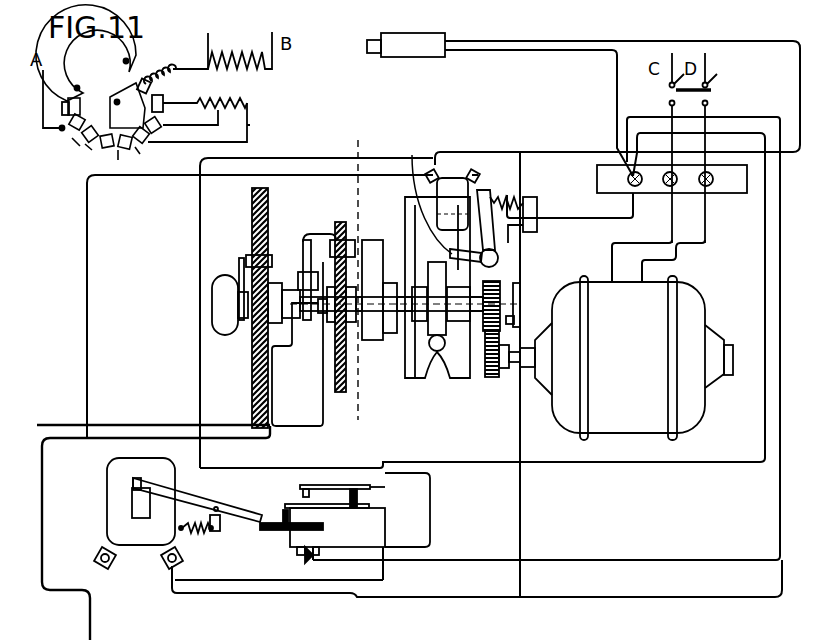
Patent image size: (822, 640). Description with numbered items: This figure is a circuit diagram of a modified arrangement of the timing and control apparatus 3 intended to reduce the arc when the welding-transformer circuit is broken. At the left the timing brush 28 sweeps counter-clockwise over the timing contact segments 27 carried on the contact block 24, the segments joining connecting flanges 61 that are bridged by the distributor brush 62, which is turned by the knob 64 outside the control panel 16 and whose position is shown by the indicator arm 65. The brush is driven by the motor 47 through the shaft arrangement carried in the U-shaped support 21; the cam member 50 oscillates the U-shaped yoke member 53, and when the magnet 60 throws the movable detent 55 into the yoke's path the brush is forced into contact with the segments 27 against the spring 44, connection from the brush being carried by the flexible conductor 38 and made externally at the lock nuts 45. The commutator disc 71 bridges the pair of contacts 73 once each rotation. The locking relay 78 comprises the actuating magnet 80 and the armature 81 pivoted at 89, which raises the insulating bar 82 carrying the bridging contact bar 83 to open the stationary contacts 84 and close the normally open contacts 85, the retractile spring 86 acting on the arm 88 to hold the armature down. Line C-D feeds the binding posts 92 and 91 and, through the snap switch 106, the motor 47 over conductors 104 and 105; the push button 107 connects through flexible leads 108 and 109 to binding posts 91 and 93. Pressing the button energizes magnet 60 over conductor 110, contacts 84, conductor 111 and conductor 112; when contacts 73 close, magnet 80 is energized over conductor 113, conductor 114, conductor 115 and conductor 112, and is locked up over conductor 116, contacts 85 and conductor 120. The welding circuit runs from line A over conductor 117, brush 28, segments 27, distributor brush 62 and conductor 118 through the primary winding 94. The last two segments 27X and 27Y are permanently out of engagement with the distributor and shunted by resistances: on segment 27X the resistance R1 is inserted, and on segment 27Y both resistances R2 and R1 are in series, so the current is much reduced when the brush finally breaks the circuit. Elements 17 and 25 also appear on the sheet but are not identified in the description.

The timing and control apparatus 3 is at (232, 221).
The control panel 16 is at (253, 194).
The push rod head 17 is at (214, 318).
The U-shaped support 21 is at (447, 392).
The contact block 24 is at (342, 394).
The contact bar 25 is at (252, 413).
The timing contact segments 27 is at (350, 222).
The contact segment 27X is at (192, 111).
The last contact segment 27Y is at (166, 98).
The timing brush 28 is at (64, 101).
The flexible conductor 38 is at (386, 251).
The spring 44 is at (347, 320).
The lock nuts 45 is at (322, 313).
The motor 47 is at (638, 346).
The cam member 50 is at (448, 370).
The U-shaped yoke member 53 is at (440, 355).
The movable detent 55 is at (428, 196).
The magnet 60 is at (460, 190).
The connecting flanges 61 is at (316, 235).
The distributor brush 62 is at (309, 256).
The knob 64 is at (213, 298).
The indicator arm 65 is at (242, 263).
The commutator disc 71 is at (522, 280).
The contacts 73 is at (480, 270).
The locking relay 78 is at (477, 593).
The actuating magnet 80 is at (138, 546).
The armature 81 is at (185, 500).
The bar of insulating material 82 is at (287, 517).
The bridging contact bar 83 is at (300, 535).
The stationary contacts 84 is at (308, 547).
The normally open contacts 85 is at (298, 498).
The retractile spring 86 is at (192, 530).
The arm 88 is at (229, 532).
The armature pivot 89 is at (218, 506).
The binding post 91 is at (711, 185).
The binding post 92 is at (675, 185).
The binding post 93 is at (640, 185).
The primary winding 94 is at (232, 70).
The conductor 104 is at (675, 261).
The conductor 105 is at (706, 243).
The snap switch 106 is at (713, 90).
The push button 107 is at (372, 51).
The flexible lead 108 is at (523, 43).
The flexible lead 109 is at (590, 50).
The conductor 110 is at (665, 115).
The conductor 111 is at (200, 275).
The conductor 112 is at (500, 158).
The conductor 113 is at (605, 218).
The conductor 114 is at (519, 523).
The conductor 115 is at (88, 258).
The conductor 116 is at (747, 130).
The conductor 117 is at (157, 425).
The conductor 118 is at (272, 408).
The conductor 120 is at (370, 596).
The resistance R1 is at (217, 123).
The resistance R2 is at (200, 110).